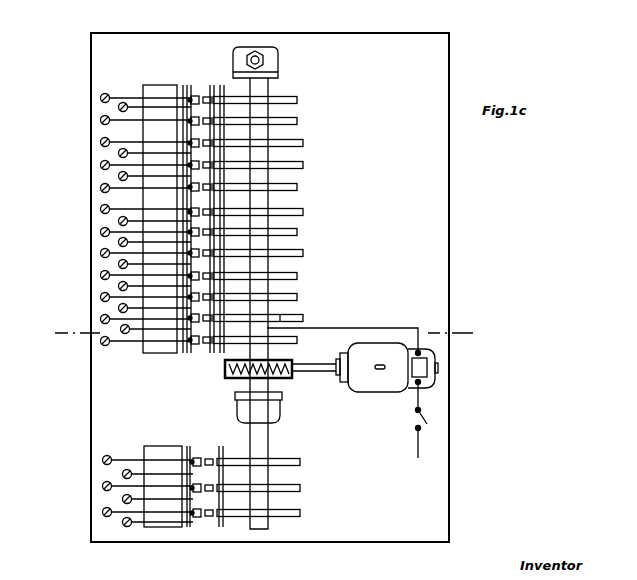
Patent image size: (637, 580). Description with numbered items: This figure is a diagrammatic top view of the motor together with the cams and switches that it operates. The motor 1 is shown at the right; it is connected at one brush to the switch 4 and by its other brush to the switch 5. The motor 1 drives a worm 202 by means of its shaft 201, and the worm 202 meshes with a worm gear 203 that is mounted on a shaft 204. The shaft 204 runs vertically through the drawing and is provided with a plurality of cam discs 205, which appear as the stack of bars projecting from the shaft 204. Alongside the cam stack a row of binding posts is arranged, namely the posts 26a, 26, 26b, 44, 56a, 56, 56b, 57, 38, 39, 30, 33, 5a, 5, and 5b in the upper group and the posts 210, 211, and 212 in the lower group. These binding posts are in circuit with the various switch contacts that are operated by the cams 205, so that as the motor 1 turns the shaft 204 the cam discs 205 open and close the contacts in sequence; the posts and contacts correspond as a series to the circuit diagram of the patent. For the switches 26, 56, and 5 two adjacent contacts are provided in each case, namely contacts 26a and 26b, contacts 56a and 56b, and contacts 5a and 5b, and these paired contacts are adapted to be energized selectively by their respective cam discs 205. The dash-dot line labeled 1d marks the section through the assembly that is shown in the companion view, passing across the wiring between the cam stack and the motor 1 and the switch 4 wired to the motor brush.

The motor 1 is at (387, 385).
The section line 1d is at (258, 337).
The switch 4 is at (424, 416).
The switch 5 is at (125, 334).
The contact 5a is at (100, 319).
The contact 5b is at (101, 344).
The binding post 26 is at (118, 107).
The contact 26a is at (101, 96).
The contact 26b is at (100, 120).
The binding post 30 is at (118, 285).
The binding post 33 is at (118, 307).
The binding post 38 is at (118, 241).
The binding post 39 is at (118, 263).
The binding post 44 is at (118, 152).
The binding post 56 is at (118, 176).
The contact 56a is at (100, 165).
The contact 56b is at (100, 188).
The binding post 57 is at (118, 220).
The shaft 201 is at (325, 371).
The worm 202 is at (236, 380).
The worm gear 203 is at (225, 370).
The shaft 204 is at (266, 287).
The cam discs 205 is at (298, 255).
The binding post 210 is at (122, 475).
The binding post 211 is at (122, 500).
The binding post 212 is at (122, 523).